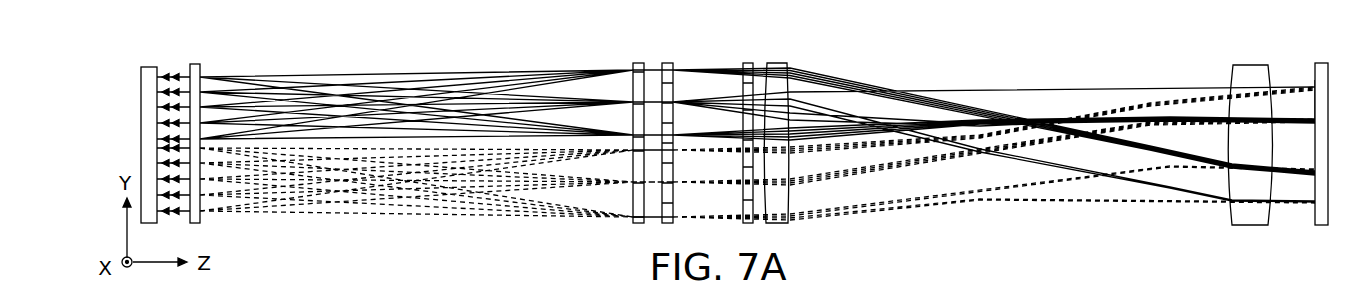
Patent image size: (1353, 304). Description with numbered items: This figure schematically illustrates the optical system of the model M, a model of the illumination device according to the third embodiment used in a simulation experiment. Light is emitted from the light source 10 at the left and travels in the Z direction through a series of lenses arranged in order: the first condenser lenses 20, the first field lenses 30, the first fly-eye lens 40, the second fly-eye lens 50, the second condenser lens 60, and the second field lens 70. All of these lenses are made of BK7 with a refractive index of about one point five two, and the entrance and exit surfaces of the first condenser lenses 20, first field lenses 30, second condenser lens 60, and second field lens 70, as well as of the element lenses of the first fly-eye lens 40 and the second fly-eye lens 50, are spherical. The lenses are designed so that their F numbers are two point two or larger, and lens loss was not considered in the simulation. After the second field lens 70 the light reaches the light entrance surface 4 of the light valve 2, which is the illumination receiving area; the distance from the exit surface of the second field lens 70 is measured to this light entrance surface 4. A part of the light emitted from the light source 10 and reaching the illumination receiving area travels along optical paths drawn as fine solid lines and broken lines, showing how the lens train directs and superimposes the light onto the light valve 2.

The light source 10 is at (148, 72).
The first condenser lenses 20 is at (195, 68).
The first field lenses 30 is at (637, 66).
The first fly-eye lens 40 is at (669, 66).
The second fly-eye lens 50 is at (749, 66).
The second condenser lens 60 is at (781, 66).
The second field lens 70 is at (1253, 73).
The light entrance surface 4 is at (1313, 100).
The light valve 2 is at (1322, 63).